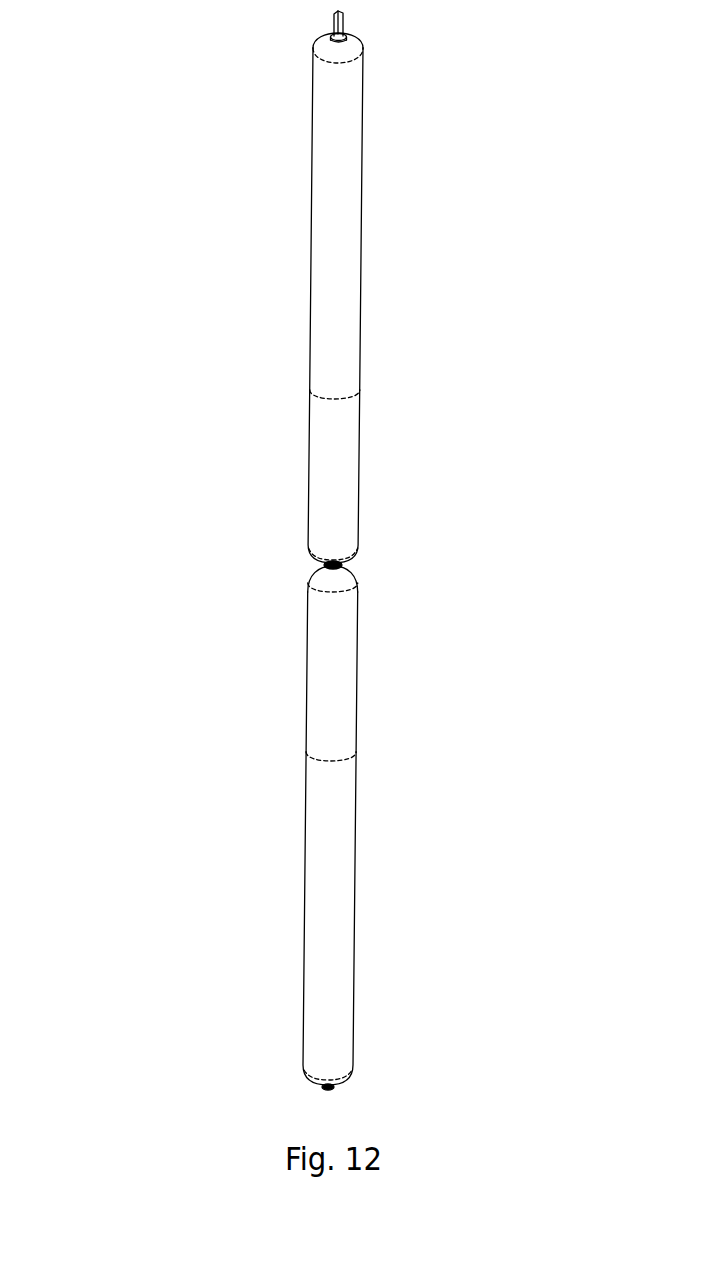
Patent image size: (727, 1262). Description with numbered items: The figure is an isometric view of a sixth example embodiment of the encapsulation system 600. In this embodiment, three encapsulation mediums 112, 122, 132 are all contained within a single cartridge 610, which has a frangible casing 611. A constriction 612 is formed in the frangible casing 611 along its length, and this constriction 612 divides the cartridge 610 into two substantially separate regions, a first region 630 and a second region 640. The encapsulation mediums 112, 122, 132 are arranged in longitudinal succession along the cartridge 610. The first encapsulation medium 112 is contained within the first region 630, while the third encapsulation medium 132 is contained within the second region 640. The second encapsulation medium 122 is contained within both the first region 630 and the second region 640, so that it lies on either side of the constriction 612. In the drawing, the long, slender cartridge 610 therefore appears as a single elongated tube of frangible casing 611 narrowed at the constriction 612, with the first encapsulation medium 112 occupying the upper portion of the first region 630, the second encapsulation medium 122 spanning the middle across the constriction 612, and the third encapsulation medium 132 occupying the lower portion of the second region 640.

The encapsulation system 600 is at (288, 102).
The cartridge 610 is at (288, 460).
The frangible casing 611 is at (311, 163).
The constriction 612 is at (353, 563).
The first encapsulation medium 112 is at (347, 262).
The second encapsulation medium 122 is at (332, 493).
The third encapsulation medium 132 is at (340, 980).
The first region 630 is at (378, 363).
The second region 640 is at (377, 878).